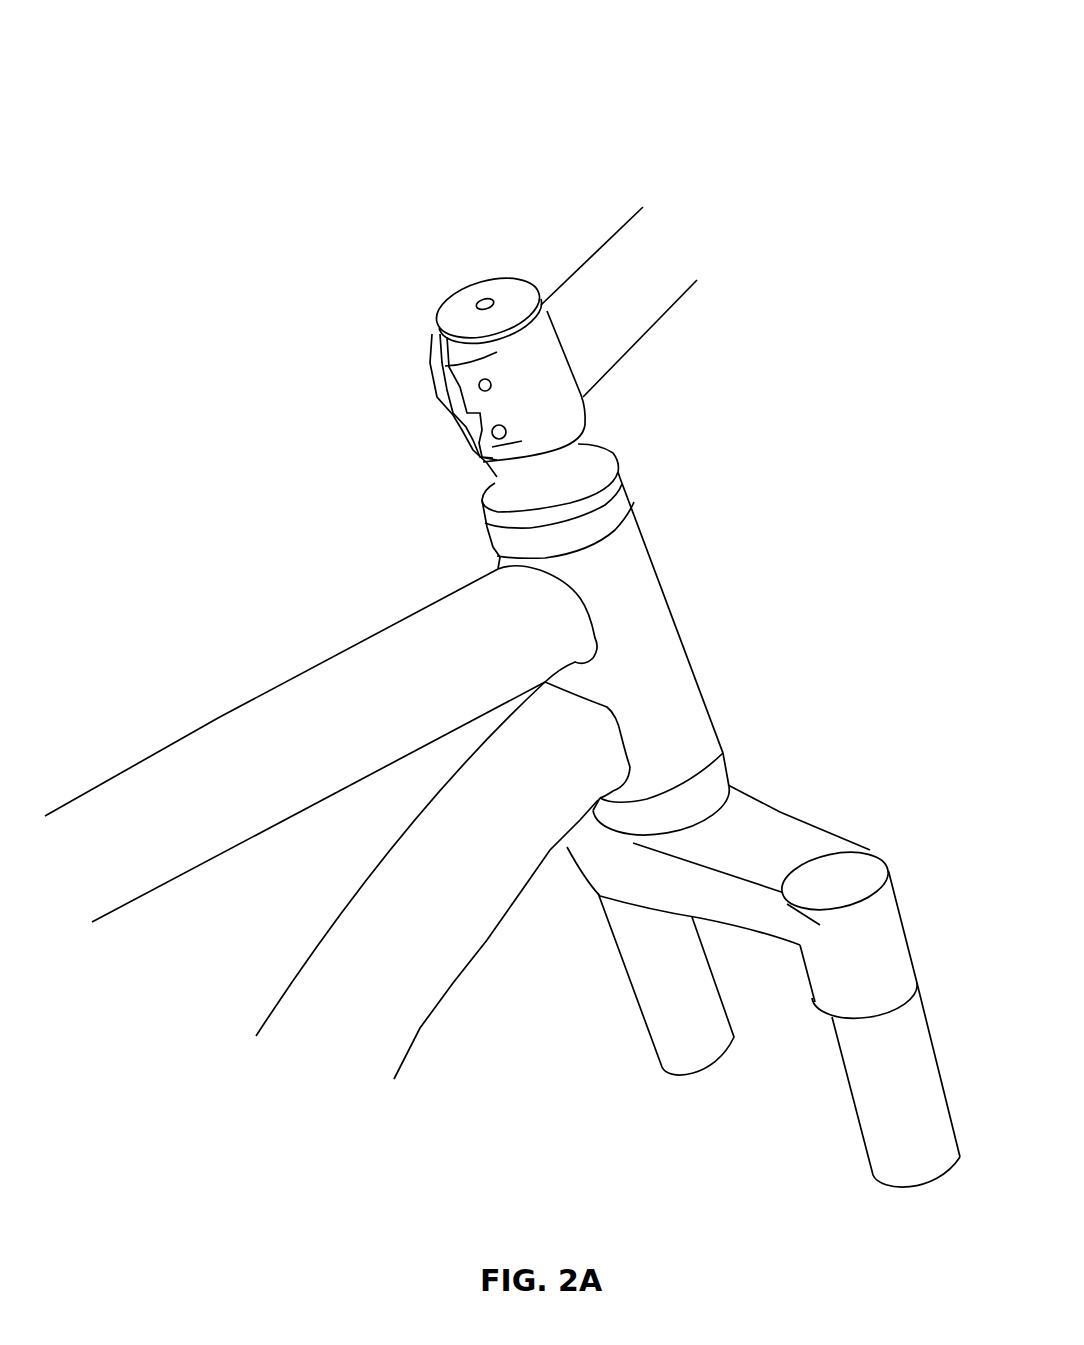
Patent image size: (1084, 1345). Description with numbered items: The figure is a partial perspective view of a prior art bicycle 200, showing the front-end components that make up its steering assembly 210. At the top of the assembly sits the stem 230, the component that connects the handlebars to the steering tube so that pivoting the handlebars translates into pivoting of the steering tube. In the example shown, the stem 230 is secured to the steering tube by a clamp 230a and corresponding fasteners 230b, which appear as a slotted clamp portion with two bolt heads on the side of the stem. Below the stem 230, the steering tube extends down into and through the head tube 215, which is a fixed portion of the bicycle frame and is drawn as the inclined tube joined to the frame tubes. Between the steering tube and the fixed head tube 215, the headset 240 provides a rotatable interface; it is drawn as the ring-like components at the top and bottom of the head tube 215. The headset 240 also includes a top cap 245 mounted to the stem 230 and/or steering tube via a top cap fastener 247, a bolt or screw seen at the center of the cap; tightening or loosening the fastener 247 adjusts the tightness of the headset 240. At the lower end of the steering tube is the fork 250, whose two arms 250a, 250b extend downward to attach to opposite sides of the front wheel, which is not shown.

The bicycle 200 is at (766, 150).
The steering assembly 210 is at (402, 297).
The head tube 215 is at (640, 603).
The stem 230 is at (607, 277).
The clamp 230a is at (437, 356).
The fasteners 230b is at (497, 433).
The headset 240 is at (715, 777).
The top cap 245 is at (448, 312).
The top cap fastener 247 is at (483, 303).
The fork 250 is at (840, 789).
The first fork arm 250a is at (657, 1003).
The second fork arm 250b is at (880, 1092).